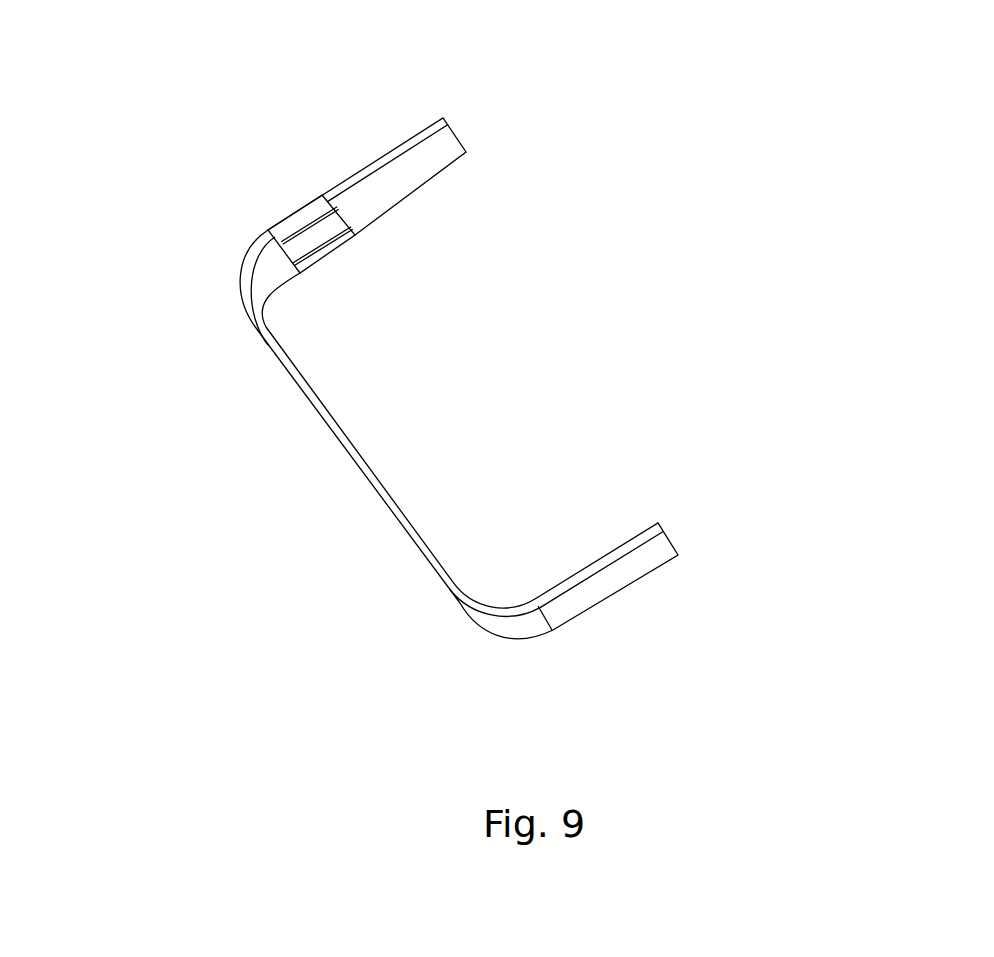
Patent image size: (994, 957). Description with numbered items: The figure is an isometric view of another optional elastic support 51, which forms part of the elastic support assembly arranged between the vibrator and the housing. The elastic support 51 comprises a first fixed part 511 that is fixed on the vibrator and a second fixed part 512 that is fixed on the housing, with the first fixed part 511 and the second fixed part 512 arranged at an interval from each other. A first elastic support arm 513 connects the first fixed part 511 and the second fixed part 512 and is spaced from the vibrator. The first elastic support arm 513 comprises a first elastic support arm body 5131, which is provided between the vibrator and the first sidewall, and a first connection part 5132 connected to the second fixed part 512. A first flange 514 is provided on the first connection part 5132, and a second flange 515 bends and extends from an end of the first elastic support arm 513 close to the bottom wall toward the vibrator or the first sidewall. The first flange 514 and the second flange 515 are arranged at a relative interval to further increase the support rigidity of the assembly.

The elastic support 51 is at (422, 78).
The first fixed part 511 is at (652, 546).
The second fixed part 512 is at (432, 147).
The first elastic support arm 513 is at (388, 713).
The first elastic support arm body 5131 is at (412, 532).
The first connection part 5132 is at (284, 262).
The first flange 514 is at (303, 218).
The second flange 515 is at (325, 247).